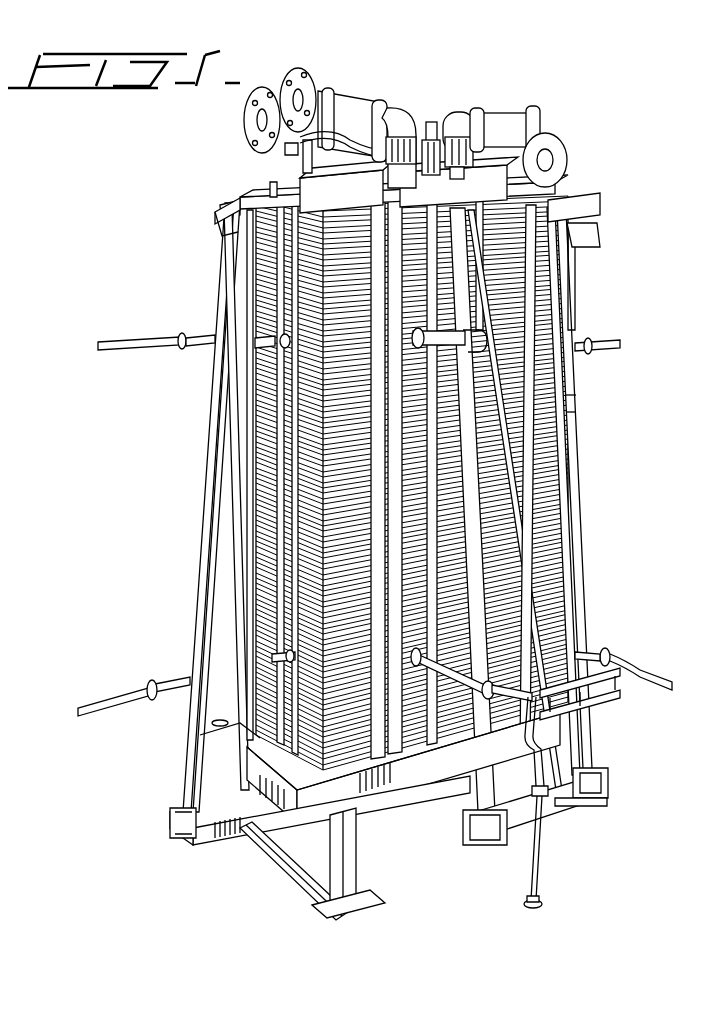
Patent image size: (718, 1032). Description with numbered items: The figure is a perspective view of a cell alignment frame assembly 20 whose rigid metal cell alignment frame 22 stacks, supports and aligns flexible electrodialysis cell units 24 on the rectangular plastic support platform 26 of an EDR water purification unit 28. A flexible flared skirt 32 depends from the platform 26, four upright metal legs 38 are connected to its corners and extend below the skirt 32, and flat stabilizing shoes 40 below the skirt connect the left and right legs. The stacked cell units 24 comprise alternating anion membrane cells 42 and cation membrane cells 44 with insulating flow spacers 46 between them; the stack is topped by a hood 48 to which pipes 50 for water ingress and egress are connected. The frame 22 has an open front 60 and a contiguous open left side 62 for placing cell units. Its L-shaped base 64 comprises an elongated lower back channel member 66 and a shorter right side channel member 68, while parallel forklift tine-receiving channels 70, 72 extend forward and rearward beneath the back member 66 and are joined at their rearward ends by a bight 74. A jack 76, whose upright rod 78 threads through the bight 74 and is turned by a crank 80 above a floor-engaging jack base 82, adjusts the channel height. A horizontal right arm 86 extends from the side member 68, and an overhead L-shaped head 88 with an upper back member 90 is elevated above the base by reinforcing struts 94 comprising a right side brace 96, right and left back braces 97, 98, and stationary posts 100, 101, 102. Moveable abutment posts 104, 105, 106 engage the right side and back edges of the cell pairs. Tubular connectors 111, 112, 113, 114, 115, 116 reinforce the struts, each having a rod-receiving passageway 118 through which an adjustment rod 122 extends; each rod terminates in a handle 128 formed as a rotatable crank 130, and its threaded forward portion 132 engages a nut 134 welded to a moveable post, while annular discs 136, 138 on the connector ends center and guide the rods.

The cell alignment frame assembly 20 is at (600, 205).
The cell alignment frame 22 is at (233, 203).
The electrodialysis cell units 24 is at (573, 290).
The support platform 26 is at (230, 743).
The EDR water purification unit 28 is at (410, 140).
The flared skirt 32 is at (240, 765).
The legs 38 is at (362, 862).
The stabilizing shoes 40 is at (295, 870).
The anion membrane cells 42 is at (577, 300).
The cation membrane cells 44 is at (572, 395).
The insulating flow spacers 46 is at (572, 412).
The hood 48 is at (247, 193).
The pipes 50 is at (507, 127).
The open front 60 is at (175, 575).
The open left side 62 is at (595, 573).
The L-shaped base 64 is at (356, 806).
The back channel member 66 is at (620, 688).
The right side channel member 68 is at (287, 802).
The forklift tine-receiving channel 70 is at (610, 780).
The forklift tine-receiving channel 72 is at (490, 848).
The bight 74 is at (575, 808).
The jack 76 is at (540, 863).
The upright rod 78 is at (548, 788).
The crank 80 is at (545, 727).
The jack base 82 is at (545, 905).
The right arm 86 is at (178, 826).
The L-shaped head 88 is at (300, 187).
The upper back member 90 is at (520, 220).
The reinforcing struts 94 is at (220, 255).
The right side brace 96 is at (235, 455).
The right back brace 97 is at (462, 825).
The left back brace 98 is at (570, 550).
The stationary right side post 100 is at (245, 625).
The stationary right back post 101 is at (500, 452).
The stationary left back post 102 is at (557, 520).
The moveable right side post 104 is at (262, 425).
The moveable right back post 105 is at (412, 487).
The moveable left back post 106 is at (535, 565).
The upper right side tubular connector 111 is at (198, 330).
The lower right side tubular connector 112 is at (175, 680).
The upper right back tubular connector 113 is at (465, 330).
The lower right back tubular connector 114 is at (478, 698).
The upper left back tubular connector 115 is at (575, 350).
The lower left back tubular connector 116 is at (607, 650).
The rod-receiving passageway 118 is at (150, 702).
The adjustment rods 122 is at (262, 345).
The handle 128 is at (125, 340).
The rotatable crank 130 is at (645, 680).
The threaded forward portion 132 is at (268, 660).
The nut 134 is at (280, 348).
The annular disc 136 is at (622, 660).
The annular disc 138 is at (425, 332).